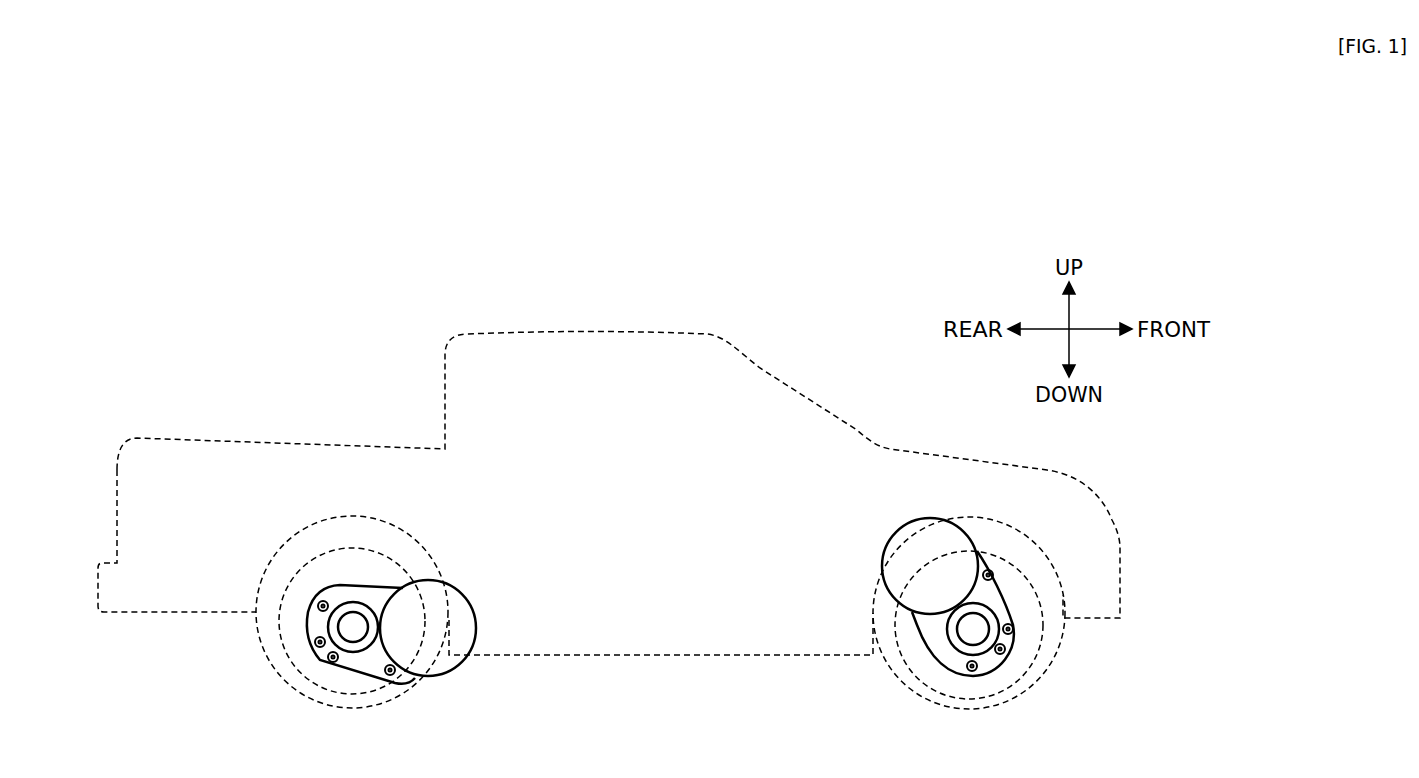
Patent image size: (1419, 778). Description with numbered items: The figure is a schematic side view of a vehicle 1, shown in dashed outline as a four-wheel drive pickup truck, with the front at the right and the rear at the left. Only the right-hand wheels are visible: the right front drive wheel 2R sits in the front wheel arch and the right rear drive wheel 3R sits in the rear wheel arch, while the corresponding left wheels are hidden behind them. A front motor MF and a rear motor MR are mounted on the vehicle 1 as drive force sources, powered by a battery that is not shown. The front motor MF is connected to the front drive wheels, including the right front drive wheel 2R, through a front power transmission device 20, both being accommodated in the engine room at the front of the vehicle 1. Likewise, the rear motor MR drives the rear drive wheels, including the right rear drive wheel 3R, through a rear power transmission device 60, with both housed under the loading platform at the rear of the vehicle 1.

The vehicle 1 is at (626, 508).
The right rear drive wheel 3R is at (293, 655).
The right front drive wheel 2R is at (1023, 662).
The rear power transmission device 60 is at (362, 657).
The front power transmission device 20 is at (940, 642).
The rear motor MR is at (453, 610).
The front motor MF is at (917, 553).